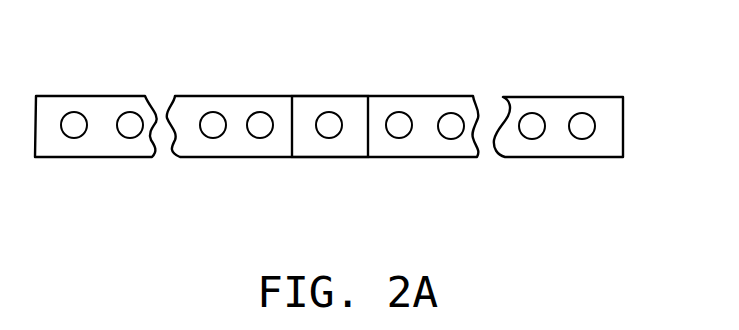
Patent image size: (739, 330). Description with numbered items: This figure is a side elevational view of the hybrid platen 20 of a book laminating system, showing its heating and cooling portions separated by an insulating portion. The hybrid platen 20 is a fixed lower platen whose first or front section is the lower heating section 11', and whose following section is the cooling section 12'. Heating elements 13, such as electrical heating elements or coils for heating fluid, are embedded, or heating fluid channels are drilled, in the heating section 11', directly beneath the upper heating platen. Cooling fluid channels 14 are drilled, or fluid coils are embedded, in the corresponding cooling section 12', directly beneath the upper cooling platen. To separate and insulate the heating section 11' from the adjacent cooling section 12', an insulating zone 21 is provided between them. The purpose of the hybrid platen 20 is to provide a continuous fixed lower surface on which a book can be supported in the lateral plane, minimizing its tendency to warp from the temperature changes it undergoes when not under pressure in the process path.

The lower heating section 11' is at (102, 95).
The cooling section 12' is at (589, 153).
The heating elements 13 is at (258, 126).
The cooling fluid channels 14 is at (452, 127).
The hybrid platen 20 is at (348, 159).
The insulating zone 21 is at (324, 96).